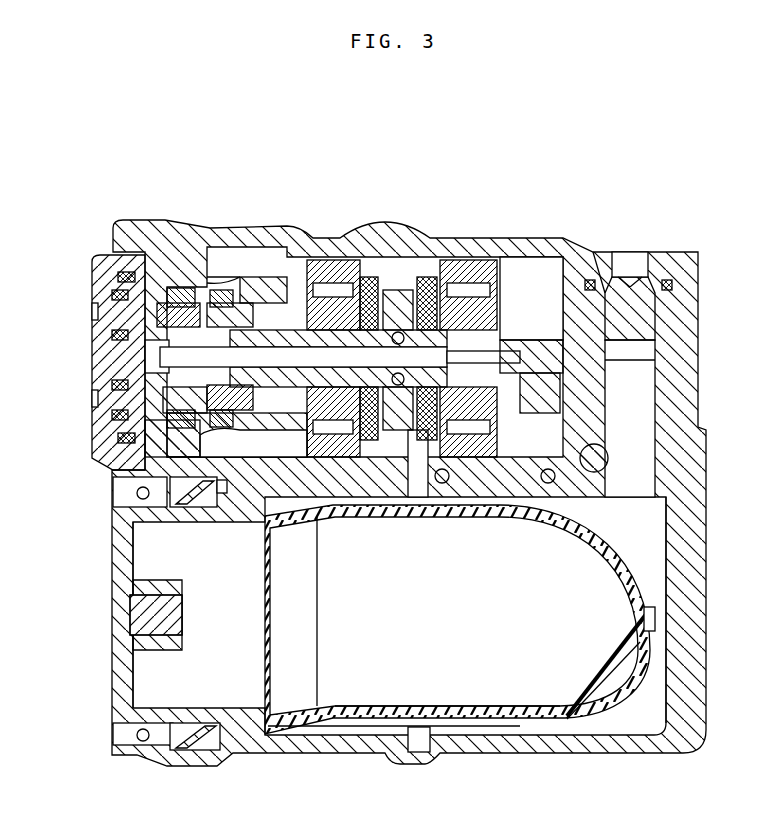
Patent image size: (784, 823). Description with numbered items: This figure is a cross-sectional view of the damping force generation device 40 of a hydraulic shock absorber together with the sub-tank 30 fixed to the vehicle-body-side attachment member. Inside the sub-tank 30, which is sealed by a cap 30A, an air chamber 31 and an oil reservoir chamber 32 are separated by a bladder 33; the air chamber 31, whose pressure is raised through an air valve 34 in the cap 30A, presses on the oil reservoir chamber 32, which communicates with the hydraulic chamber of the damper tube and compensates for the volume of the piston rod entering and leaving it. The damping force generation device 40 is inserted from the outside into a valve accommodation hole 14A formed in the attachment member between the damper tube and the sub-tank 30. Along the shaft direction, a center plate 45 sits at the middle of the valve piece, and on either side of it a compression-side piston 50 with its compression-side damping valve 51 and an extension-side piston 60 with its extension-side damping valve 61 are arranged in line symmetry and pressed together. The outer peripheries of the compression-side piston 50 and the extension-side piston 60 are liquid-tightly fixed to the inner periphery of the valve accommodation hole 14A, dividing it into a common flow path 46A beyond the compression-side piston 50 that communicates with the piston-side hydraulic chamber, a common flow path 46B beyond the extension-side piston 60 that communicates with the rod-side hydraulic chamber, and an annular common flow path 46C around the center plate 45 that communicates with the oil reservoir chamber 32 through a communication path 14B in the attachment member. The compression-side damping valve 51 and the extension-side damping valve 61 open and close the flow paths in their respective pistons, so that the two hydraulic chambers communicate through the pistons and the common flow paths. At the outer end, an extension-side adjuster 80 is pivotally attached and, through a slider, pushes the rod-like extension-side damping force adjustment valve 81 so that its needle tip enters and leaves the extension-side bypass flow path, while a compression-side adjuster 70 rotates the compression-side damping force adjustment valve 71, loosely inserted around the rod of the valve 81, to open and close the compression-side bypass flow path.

The valve accommodation hole 14A is at (578, 275).
The communication path 14B is at (413, 480).
The sub-tank 30 is at (522, 753).
The cap 30A is at (125, 672).
The air chamber 31 is at (489, 660).
The oil reservoir chamber 32 is at (648, 710).
The bladder 33 is at (598, 693).
The air valve 34 is at (152, 612).
The damping force generation device 40 is at (93, 262).
The center plate 45 is at (397, 297).
The common flow path 46A is at (264, 258).
The common flow path 46B is at (533, 267).
The common flow path 46C is at (392, 440).
The compression-side piston 50 is at (344, 262).
The compression-side damping valve 51 is at (370, 283).
The extension-side piston 60 is at (482, 268).
The extension-side damping valve 61 is at (423, 290).
The compression-side adjuster 70 is at (92, 412).
The compression-side damping force adjustment valve 71 is at (230, 293).
The extension-side adjuster 80 is at (95, 298).
The extension-side damping force adjustment valve 81 is at (282, 357).